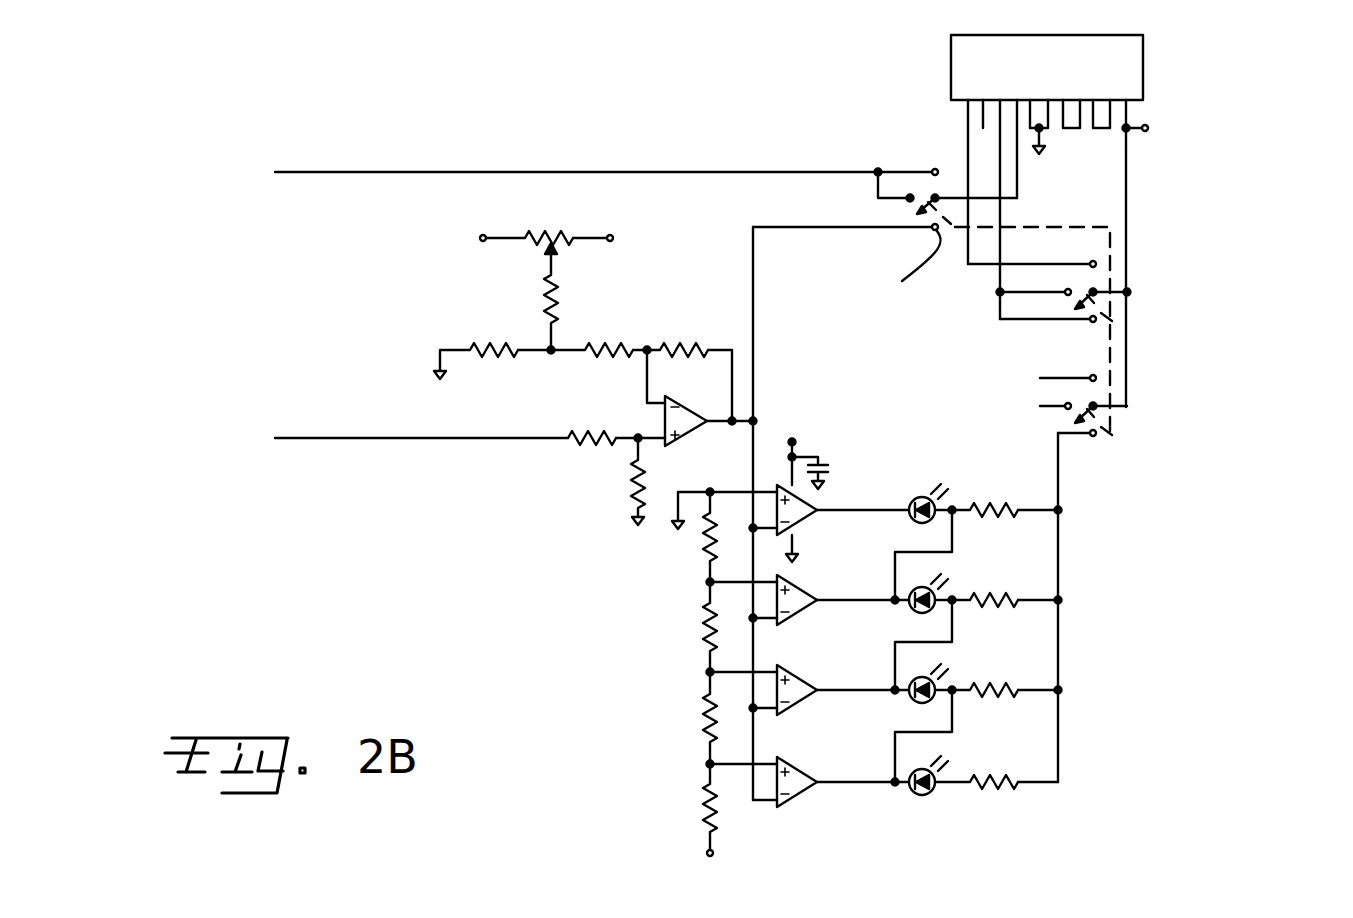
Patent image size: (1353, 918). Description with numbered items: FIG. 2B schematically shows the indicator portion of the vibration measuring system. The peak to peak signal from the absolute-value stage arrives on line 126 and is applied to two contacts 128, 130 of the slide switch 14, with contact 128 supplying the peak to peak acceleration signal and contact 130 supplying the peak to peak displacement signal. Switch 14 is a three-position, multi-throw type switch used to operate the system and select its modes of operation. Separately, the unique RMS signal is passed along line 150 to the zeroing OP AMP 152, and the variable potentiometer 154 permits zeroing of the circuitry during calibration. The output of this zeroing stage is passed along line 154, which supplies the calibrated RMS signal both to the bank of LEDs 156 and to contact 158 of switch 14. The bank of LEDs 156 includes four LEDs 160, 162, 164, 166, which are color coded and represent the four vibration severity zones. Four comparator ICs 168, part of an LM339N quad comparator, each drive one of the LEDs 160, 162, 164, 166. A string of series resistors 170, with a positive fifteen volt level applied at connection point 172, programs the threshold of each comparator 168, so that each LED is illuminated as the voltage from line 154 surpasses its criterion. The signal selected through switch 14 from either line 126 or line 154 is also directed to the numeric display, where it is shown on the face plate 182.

The slide switch 14 is at (935, 198).
The line 126 is at (443, 172).
The contact 128 is at (935, 170).
The contact 130 is at (905, 212).
The line 150 is at (407, 438).
The zeroing OP AMP 152 is at (665, 421).
The variable potentiometer 154 is at (551, 268).
The bank of LEDs 156 is at (1090, 562).
The contact 158 is at (905, 268).
The LED 160 is at (930, 795).
The LED 162 is at (935, 690).
The LED 164 is at (935, 600).
The LED 166 is at (908, 497).
The comparator IC 168 is at (800, 525).
The resistor 170 is at (706, 551).
The connection point 172 is at (714, 853).
The face plate 182 is at (951, 57).